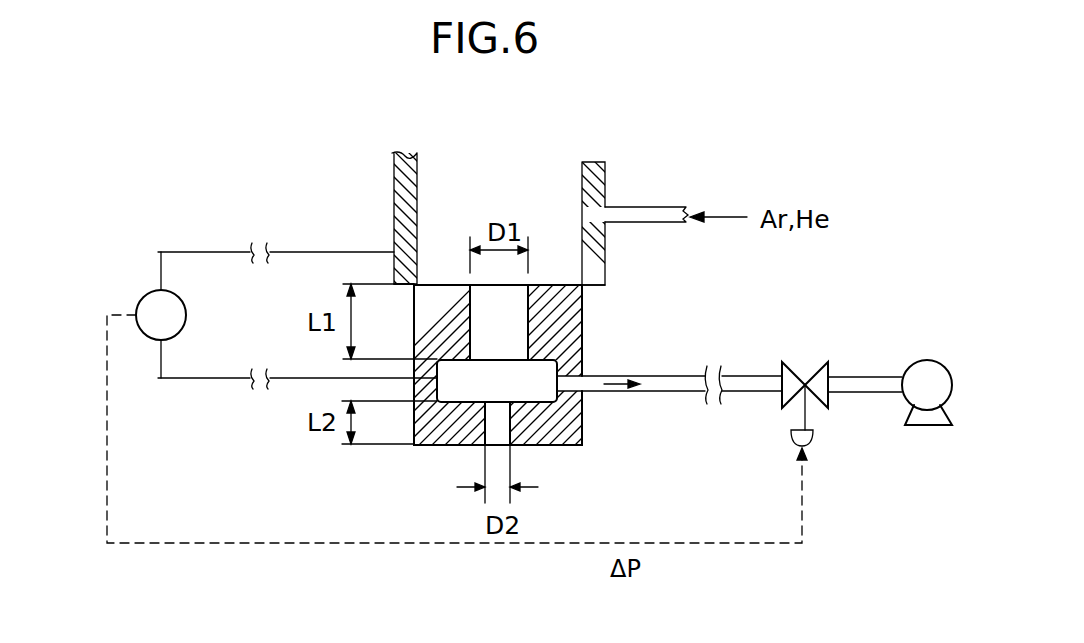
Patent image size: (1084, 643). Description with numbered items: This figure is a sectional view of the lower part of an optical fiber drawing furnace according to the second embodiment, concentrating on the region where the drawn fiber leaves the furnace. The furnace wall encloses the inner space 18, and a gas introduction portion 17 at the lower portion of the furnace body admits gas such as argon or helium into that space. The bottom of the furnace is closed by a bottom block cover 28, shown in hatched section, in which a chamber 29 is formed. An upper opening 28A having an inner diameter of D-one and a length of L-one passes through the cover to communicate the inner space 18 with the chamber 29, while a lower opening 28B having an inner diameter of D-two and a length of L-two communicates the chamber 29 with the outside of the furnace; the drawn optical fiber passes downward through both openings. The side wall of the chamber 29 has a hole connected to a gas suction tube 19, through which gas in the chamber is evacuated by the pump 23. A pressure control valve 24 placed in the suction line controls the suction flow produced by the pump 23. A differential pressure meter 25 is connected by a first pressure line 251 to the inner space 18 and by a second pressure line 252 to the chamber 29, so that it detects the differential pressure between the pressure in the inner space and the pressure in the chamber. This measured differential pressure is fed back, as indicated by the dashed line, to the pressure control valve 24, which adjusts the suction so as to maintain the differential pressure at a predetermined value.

The gas introduction portion 17 is at (657, 215).
The inner space 18 is at (394, 195).
The gas suction tube 19 is at (660, 382).
The pump 23 is at (930, 361).
The pressure control valve 24 is at (810, 372).
The differential pressure meter 25 is at (147, 290).
The upstream pressure pipe 251 is at (215, 250).
The downstream pressure pipe 252 is at (205, 378).
The bottom block cover 28 is at (582, 430).
The upper opening 28A is at (525, 304).
The lower opening 28B is at (505, 430).
The chamber 29 is at (452, 393).